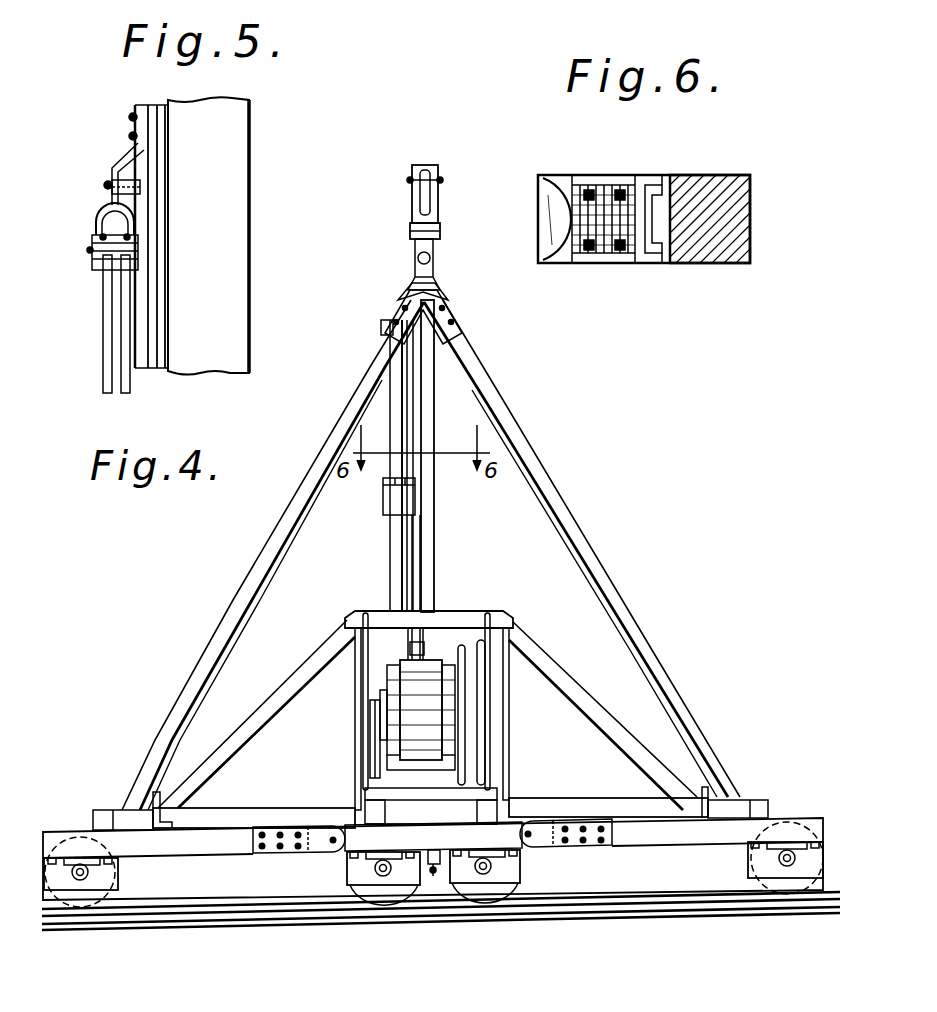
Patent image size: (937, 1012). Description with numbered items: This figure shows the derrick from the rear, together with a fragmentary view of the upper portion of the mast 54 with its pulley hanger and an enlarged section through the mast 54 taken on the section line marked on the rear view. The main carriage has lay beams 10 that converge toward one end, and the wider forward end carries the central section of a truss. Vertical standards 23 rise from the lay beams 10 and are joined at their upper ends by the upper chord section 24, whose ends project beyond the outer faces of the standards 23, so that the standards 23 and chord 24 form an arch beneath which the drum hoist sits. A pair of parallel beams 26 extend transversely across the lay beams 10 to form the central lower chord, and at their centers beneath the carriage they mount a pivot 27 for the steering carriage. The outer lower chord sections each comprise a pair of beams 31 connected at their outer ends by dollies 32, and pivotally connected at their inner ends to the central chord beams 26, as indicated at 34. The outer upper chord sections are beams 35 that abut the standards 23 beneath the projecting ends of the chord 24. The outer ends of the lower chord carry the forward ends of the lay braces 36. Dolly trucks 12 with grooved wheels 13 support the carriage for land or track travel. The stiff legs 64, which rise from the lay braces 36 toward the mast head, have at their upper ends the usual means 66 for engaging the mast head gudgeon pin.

In FIG. 4, the lay beams 10 is at (372, 808).
In FIG. 4, the dolly trucks 12 is at (345, 878).
In FIG. 4, the wheels 13 is at (80, 900).
In FIG. 4, the vertical standards 23 is at (353, 714).
In FIG. 4, the upper chord section 24 is at (483, 605).
In FIG. 4, the parallel beams 26 is at (440, 815).
In FIG. 4, the pivot 27 is at (433, 878).
In FIG. 4, the beams 31 is at (195, 850).
In FIG. 4, the dollies 32 is at (110, 876).
In FIG. 4, the pivotal connection 34 is at (308, 846).
In FIG. 4, the beam 35 is at (318, 656).
In FIG. 4, the lay braces 36 is at (255, 812).
In FIG. 5, the derrick mast 54 is at (238, 213).
In FIG. 6, the derrick mast 54 is at (697, 265).
In FIG. 4, the derrick mast 54 is at (434, 393).
In FIG. 4, the leg 64 is at (240, 590).
In FIG. 4, the mast head engaging means 66 is at (410, 294).